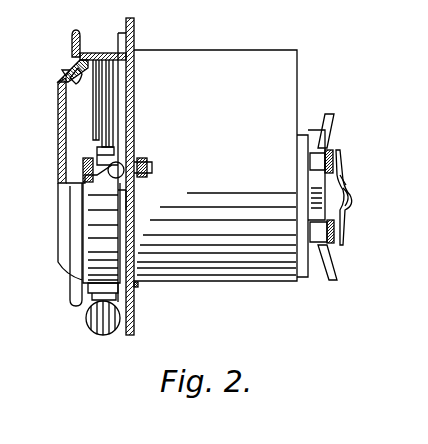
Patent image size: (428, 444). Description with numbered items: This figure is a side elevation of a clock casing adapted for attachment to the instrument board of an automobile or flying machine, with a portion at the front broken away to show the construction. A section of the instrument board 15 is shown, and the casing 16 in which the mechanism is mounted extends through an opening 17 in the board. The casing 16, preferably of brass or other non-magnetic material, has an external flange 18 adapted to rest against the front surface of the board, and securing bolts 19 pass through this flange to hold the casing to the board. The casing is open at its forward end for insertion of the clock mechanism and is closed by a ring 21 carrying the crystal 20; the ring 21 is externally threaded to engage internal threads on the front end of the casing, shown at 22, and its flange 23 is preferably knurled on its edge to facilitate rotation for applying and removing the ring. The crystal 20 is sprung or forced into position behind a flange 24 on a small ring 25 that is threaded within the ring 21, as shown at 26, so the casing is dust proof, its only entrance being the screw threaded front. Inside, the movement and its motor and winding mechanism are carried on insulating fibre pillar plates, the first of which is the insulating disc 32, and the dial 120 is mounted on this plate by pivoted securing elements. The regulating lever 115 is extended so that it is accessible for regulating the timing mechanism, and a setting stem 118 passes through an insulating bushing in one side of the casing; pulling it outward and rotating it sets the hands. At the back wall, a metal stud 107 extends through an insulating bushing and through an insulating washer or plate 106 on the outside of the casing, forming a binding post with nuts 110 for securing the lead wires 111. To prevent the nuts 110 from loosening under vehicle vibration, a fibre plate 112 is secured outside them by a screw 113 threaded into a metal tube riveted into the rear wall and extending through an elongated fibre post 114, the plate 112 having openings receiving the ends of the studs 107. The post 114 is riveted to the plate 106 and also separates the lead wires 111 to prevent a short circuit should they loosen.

The instrument board 15 is at (134, 46).
The casing 16 is at (297, 90).
The opening 17 is at (138, 287).
The external flange 18 is at (134, 202).
The securing bolts 19 is at (152, 168).
The crystal 20 is at (60, 168).
The ring 21 is at (70, 64).
The internal threads 22 is at (88, 57).
The flange 23 is at (70, 36).
The flange 24 is at (63, 72).
The small ring 25 is at (89, 78).
The threads 26 is at (72, 80).
The insulating disc 32 is at (108, 107).
The insulating washer or plate 106 is at (307, 278).
The metal stud 107 is at (345, 160).
The nuts 110 is at (328, 150).
The lead wires 111 is at (336, 115).
The fibre plate 112 is at (348, 180).
The screw 113 is at (350, 203).
The fibre post 114 is at (312, 195).
The regulating lever 115 is at (114, 151).
The setting stem 118 is at (90, 326).
The dial 120 is at (90, 116).